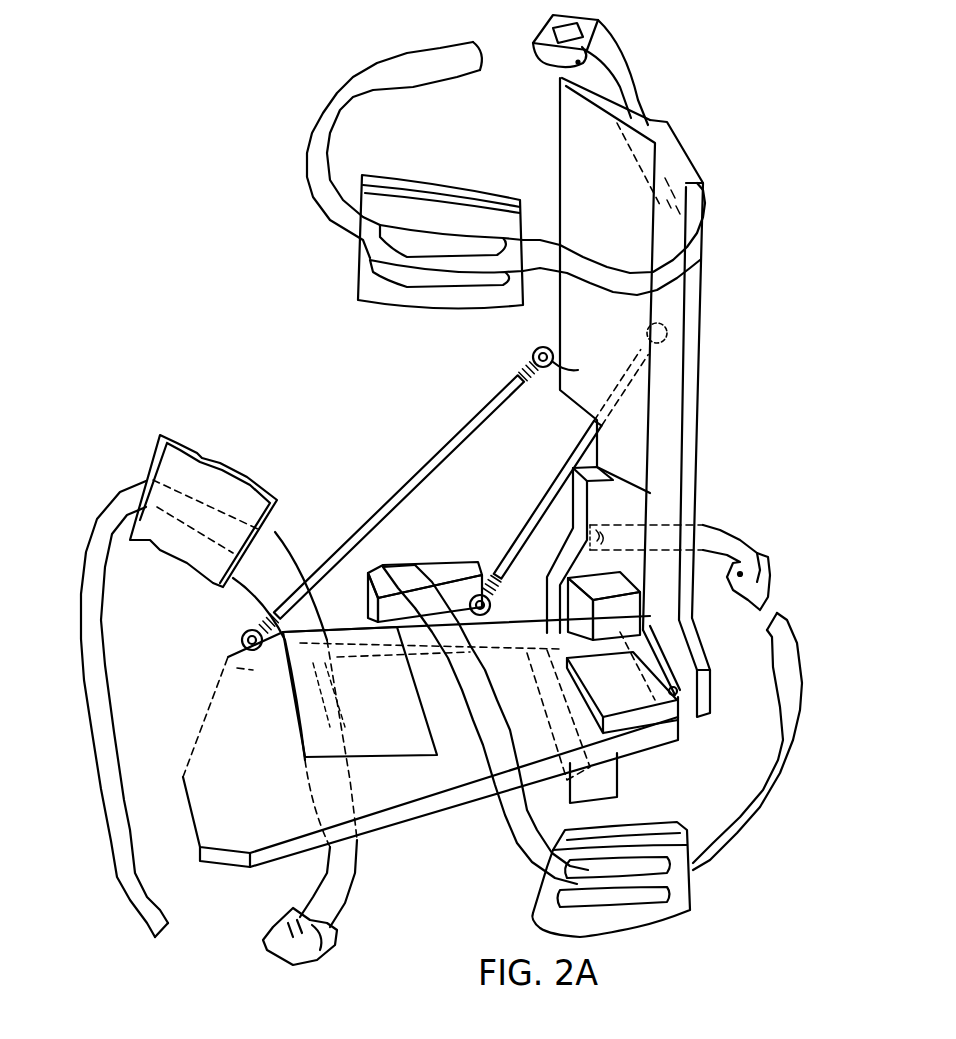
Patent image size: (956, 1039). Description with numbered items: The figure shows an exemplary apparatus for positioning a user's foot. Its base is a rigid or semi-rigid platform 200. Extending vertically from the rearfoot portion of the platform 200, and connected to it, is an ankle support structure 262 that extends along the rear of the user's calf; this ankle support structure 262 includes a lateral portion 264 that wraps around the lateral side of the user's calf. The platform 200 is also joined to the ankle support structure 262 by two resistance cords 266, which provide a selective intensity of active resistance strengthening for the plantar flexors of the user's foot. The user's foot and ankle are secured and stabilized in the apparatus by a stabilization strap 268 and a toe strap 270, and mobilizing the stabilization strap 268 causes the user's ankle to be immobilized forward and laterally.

The rigid or semi-rigid platform 200 is at (440, 800).
The ankle support structure 262 is at (677, 310).
The lateral portion 264 is at (590, 197).
The resistance cords 266 is at (533, 517).
The stabilization strap 268 is at (313, 163).
The toe strap 270 is at (330, 910).